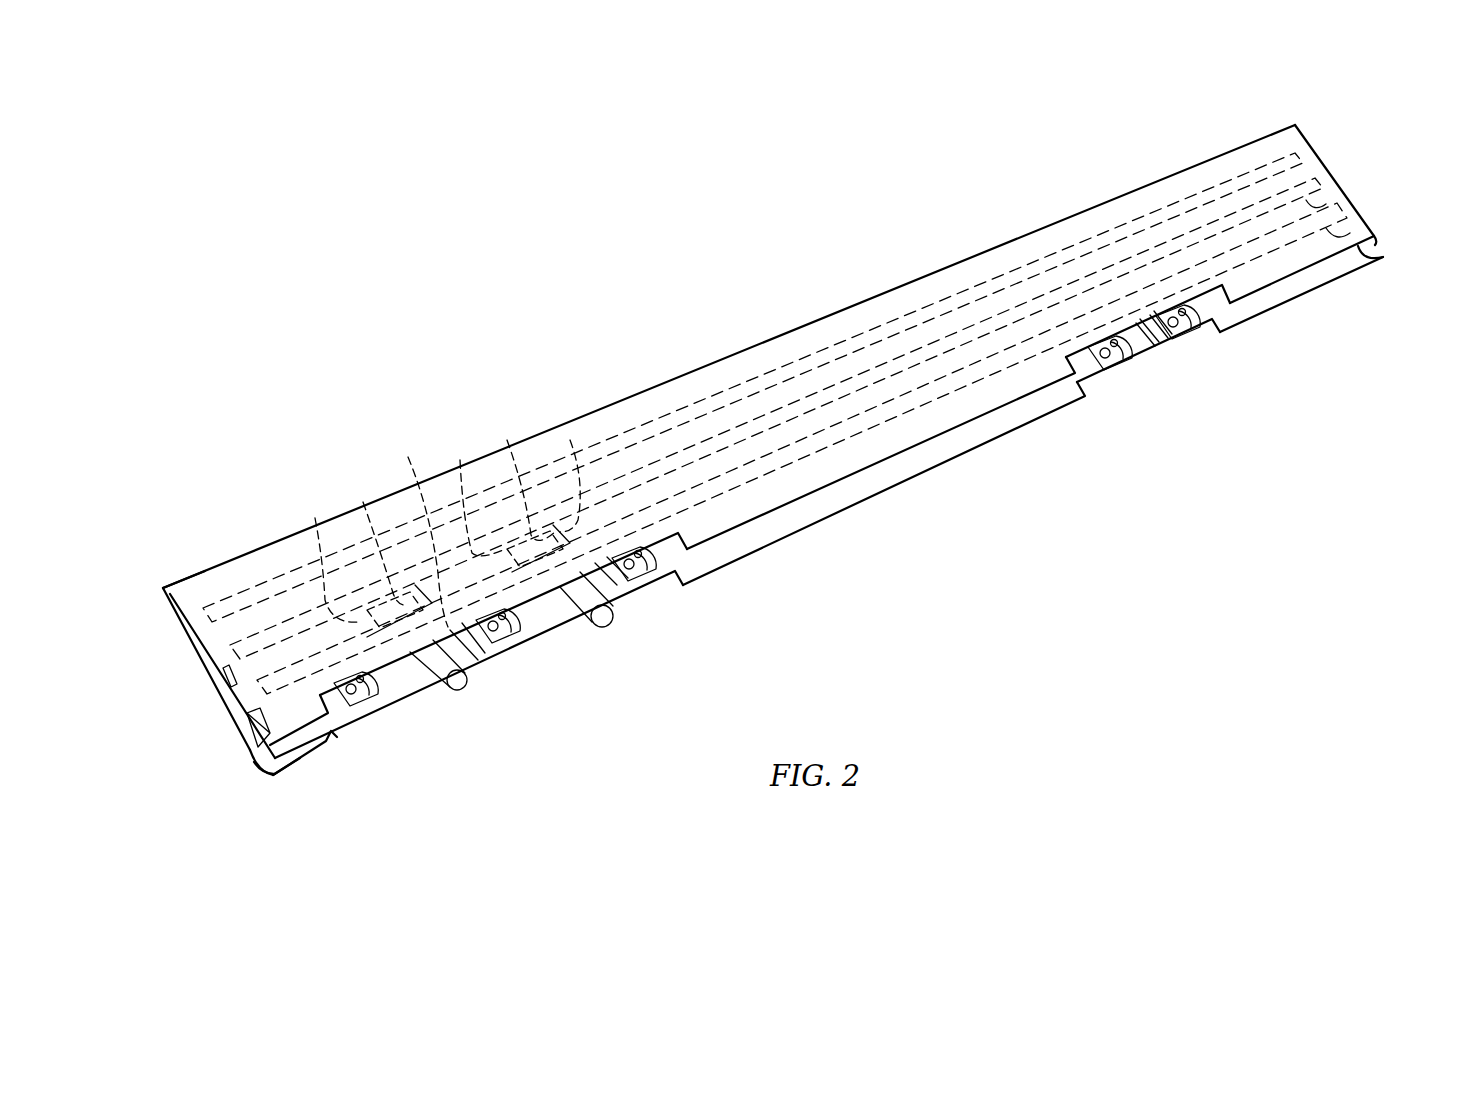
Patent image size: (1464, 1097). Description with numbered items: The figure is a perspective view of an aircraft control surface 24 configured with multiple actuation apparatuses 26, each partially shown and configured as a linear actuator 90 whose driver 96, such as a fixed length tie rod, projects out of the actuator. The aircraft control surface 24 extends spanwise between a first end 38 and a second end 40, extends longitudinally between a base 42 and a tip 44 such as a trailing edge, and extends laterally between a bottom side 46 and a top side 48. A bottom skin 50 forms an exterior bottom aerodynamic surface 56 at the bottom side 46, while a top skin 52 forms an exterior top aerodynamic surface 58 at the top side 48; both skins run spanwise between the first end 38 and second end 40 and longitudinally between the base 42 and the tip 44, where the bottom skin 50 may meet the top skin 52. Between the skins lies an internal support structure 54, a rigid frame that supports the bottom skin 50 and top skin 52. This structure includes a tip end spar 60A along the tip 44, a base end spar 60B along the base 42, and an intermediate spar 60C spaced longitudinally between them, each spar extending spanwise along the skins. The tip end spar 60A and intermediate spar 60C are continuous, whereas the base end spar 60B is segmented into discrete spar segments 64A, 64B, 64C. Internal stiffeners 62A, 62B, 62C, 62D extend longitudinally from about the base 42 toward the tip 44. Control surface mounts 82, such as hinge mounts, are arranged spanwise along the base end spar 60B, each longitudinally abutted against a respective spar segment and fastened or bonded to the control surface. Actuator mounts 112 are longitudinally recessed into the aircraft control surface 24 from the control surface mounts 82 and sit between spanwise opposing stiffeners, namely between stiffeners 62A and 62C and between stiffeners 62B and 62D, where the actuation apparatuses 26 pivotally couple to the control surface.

The aircraft control surface 24 is at (340, 350).
The actuation apparatus 26 is at (548, 735).
The linear actuator 90 is at (468, 722).
The first end 38 is at (166, 598).
The second end 40 is at (1310, 142).
The base 42 is at (300, 762).
The tip 44 is at (180, 580).
The bottom side 46 is at (239, 805).
The exterior bottom aerodynamic surface 56 is at (255, 762).
The top side 48 is at (222, 636).
The exterior top aerodynamic surface 58 is at (242, 684).
The bottom skin 50 is at (196, 679).
The top skin 52 is at (199, 641).
The internal support structure 54 is at (233, 708).
The tip end spar 60A is at (1218, 182).
The base end spar 60B is at (1382, 224).
The intermediate spar 60C is at (1330, 200).
The internal stiffener 62A is at (324, 554).
The internal stiffener 62B is at (570, 440).
The internal stiffener 62C is at (413, 526).
The internal stiffener 62D is at (468, 489).
The spar segment 64A is at (333, 745).
The spar segment 64B is at (1277, 248).
The spar segment 64C is at (522, 600).
The control surface mount 82 is at (366, 708).
The driver 96 is at (418, 682).
The actuator mount 112 is at (363, 502).